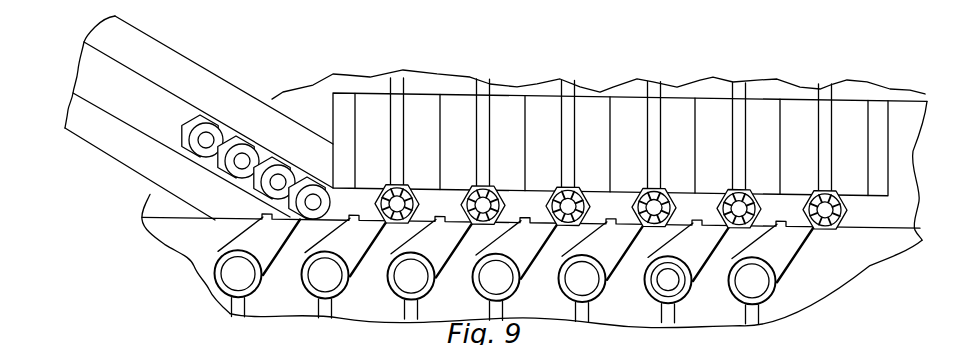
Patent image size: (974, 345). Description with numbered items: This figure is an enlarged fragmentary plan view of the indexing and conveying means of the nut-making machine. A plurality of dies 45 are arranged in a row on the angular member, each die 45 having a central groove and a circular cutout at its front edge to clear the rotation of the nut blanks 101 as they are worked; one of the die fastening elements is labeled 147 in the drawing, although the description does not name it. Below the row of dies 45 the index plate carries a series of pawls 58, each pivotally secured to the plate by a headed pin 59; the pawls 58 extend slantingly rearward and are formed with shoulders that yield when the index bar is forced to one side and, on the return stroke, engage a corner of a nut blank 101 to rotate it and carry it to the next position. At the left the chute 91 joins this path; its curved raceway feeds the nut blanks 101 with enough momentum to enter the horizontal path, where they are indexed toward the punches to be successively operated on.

The chute 91 is at (120, 113).
The nut blanks 101 is at (220, 130).
The dies 45 is at (415, 115).
The bolt studs 147 is at (824, 172).
The pawls 58 is at (441, 265).
The headed pins 59 is at (317, 284).